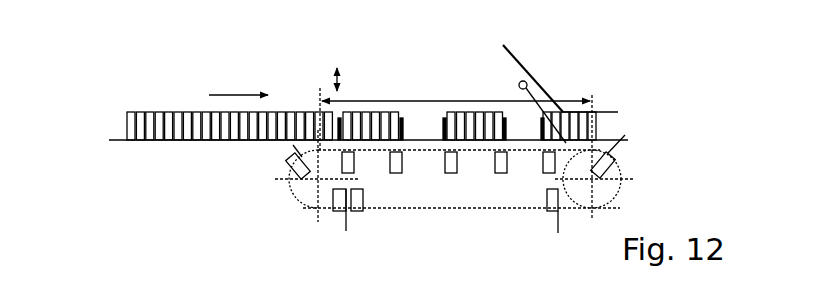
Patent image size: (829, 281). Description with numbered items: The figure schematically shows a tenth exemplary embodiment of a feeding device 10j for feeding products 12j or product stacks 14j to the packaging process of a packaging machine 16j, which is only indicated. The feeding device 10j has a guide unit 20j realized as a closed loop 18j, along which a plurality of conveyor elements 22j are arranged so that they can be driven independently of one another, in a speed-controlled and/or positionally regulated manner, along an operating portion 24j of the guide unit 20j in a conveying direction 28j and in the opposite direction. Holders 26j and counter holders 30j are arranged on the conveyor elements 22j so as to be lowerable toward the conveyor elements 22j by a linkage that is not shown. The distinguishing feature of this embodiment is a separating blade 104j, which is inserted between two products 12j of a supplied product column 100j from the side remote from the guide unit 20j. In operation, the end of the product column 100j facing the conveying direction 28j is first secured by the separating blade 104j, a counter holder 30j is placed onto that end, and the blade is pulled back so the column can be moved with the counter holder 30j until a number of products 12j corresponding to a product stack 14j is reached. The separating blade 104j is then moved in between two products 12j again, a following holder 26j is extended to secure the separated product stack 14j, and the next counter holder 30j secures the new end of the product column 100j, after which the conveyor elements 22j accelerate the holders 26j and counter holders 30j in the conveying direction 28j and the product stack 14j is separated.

The feeding device 10j is at (655, 114).
The products 12j is at (172, 124).
The product stacks 14j is at (455, 107).
The packaging machine 16j is at (604, 107).
The closed loop 18j is at (388, 210).
The guide unit 20j is at (280, 204).
The conveyor elements 22j is at (452, 170).
The operating portion 24j is at (560, 111).
The holders 26j is at (445, 148).
The conveying direction 28j is at (232, 92).
The counter holders 30j is at (507, 134).
The product column 100j is at (142, 106).
The separating blade 104j is at (338, 107).